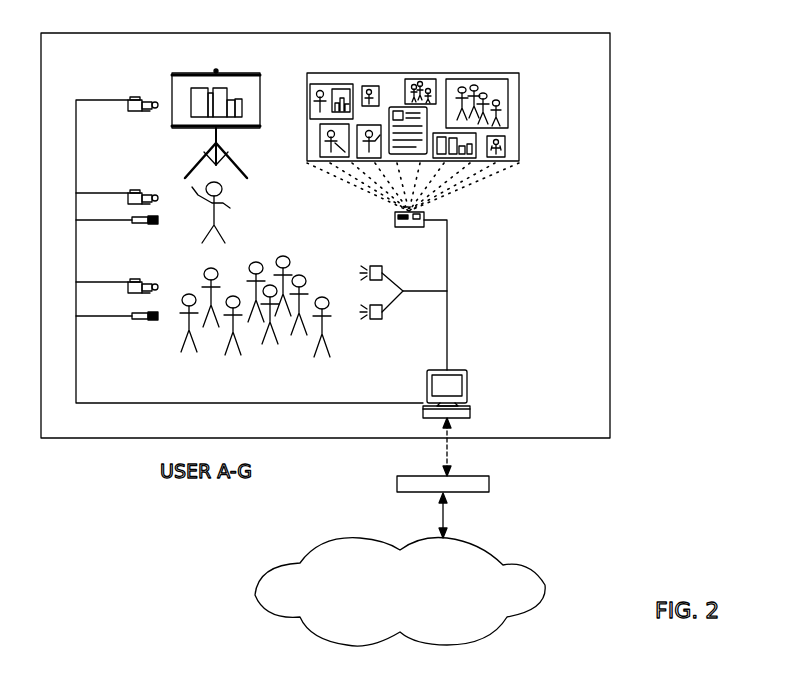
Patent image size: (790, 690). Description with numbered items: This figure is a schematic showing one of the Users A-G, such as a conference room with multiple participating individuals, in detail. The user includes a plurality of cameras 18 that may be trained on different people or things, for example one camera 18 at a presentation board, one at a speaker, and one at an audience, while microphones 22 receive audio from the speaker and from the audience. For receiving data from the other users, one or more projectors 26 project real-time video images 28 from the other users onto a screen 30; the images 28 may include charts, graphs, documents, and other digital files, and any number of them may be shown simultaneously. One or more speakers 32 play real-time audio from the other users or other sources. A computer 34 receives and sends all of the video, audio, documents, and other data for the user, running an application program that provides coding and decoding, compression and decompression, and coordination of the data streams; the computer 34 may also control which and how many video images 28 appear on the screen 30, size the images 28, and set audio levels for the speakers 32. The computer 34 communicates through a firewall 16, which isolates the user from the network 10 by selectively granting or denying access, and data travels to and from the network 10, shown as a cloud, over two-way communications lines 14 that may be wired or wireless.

The network 10 is at (518, 592).
The communications lines 14 is at (444, 443).
The firewall 16 is at (397, 490).
The camera 18 is at (127, 98).
The microphone 22 is at (133, 218).
The projector 26 is at (416, 228).
The video images 28 is at (370, 86).
The screen 30 is at (520, 80).
The speakers 32 is at (372, 266).
The computer 34 is at (470, 412).